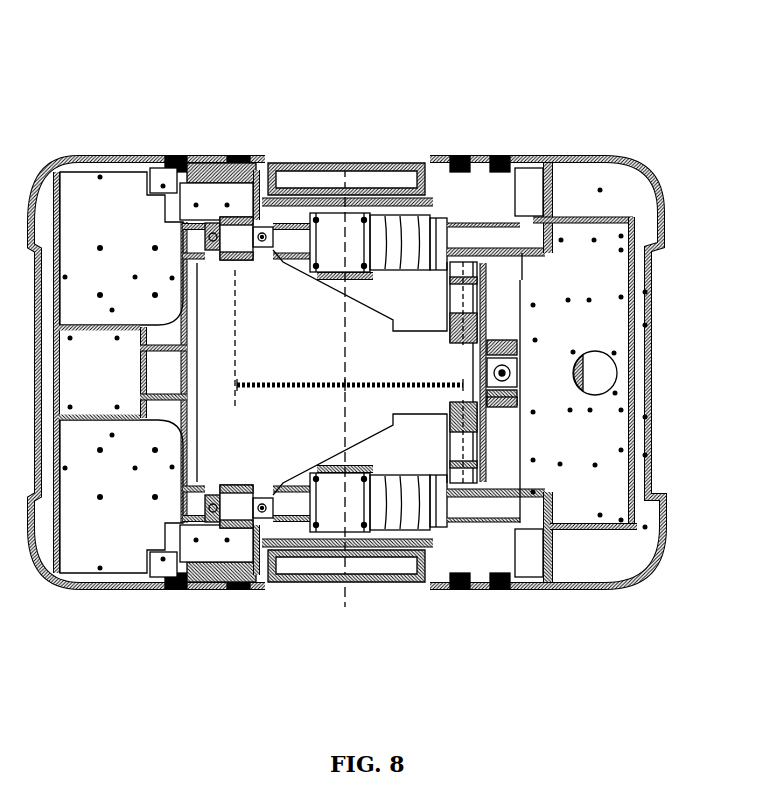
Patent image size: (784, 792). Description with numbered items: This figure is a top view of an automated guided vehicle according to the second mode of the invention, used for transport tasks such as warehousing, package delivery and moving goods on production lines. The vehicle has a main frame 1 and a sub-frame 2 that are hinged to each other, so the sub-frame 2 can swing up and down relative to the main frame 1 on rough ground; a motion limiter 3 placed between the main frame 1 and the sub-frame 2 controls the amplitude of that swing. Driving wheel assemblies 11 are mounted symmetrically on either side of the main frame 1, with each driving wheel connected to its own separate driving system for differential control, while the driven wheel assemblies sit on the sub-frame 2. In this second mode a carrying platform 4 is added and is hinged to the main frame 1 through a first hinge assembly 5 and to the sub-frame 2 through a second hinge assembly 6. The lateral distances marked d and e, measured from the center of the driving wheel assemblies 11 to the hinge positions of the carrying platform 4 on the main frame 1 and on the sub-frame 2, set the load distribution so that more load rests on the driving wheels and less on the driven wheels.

The main frame 1 is at (290, 245).
The sub-frame 2 is at (530, 280).
The motion limiter 3 is at (520, 383).
The carrying platform 4 is at (283, 427).
The first hinge assembly 5 is at (227, 233).
The second hinge assembly 6 is at (485, 290).
The driving wheel assemblies 11 is at (323, 173).